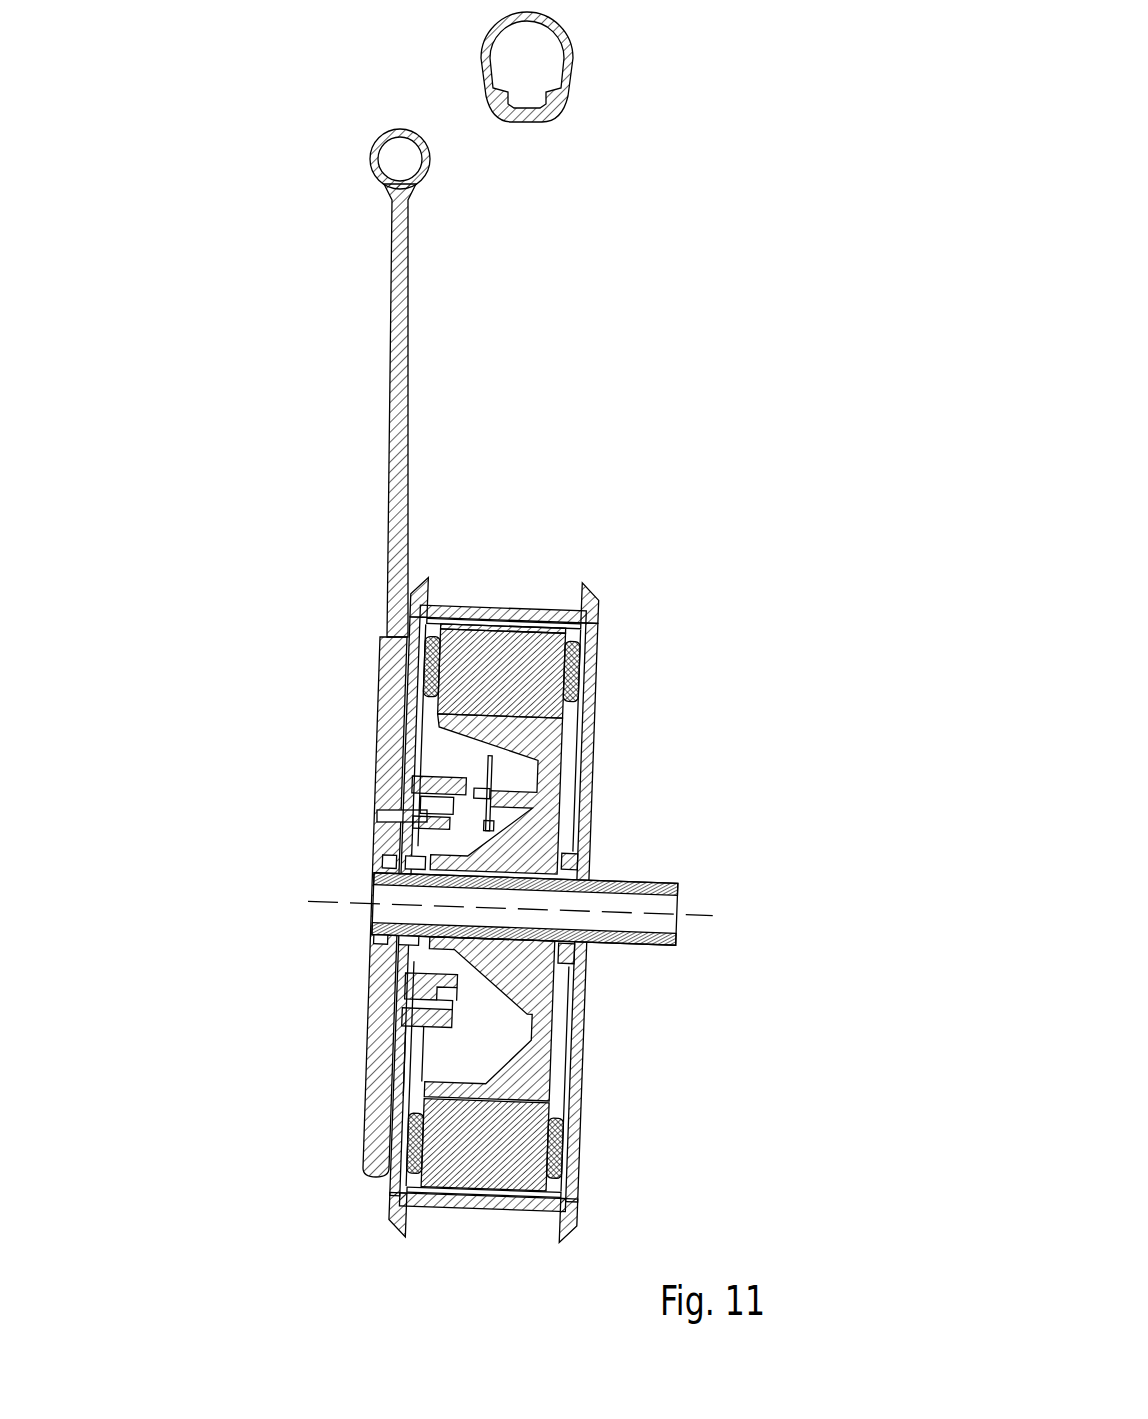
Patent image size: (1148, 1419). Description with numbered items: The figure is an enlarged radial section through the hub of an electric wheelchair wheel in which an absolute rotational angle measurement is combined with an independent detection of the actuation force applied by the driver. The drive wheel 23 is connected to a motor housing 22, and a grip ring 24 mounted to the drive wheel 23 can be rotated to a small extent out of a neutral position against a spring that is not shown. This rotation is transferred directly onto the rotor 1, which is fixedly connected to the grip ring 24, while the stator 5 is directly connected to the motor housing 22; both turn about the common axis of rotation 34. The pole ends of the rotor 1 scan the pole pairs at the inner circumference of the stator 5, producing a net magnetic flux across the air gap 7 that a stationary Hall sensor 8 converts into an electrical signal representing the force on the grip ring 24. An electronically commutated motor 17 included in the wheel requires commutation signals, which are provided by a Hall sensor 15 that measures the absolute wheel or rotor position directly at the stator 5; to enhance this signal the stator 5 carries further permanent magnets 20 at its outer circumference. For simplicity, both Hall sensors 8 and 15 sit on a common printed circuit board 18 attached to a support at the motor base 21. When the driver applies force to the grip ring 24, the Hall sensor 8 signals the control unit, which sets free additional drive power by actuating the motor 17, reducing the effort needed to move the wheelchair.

The rotor 1 is at (461, 988).
The stator 5 is at (460, 1028).
The air gap 7 is at (461, 996).
The Hall sensor 8 is at (489, 825).
The Hall sensor 15 is at (487, 764).
The electronically commutated motor 17 is at (583, 672).
The printed circuit board 18 is at (487, 779).
The permanent magnets 20 is at (436, 1045).
The motor base 21 is at (551, 1076).
The motor housing 22 is at (603, 622).
The drive wheel 23 is at (462, 63).
The grip ring 24 is at (355, 165).
The axis of rotation 34 is at (704, 899).